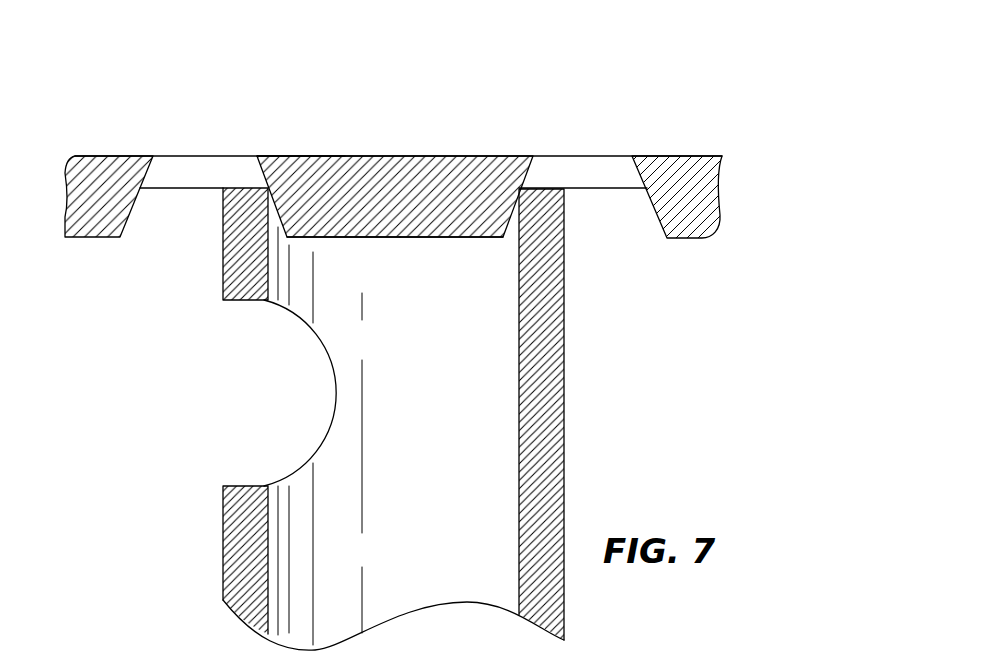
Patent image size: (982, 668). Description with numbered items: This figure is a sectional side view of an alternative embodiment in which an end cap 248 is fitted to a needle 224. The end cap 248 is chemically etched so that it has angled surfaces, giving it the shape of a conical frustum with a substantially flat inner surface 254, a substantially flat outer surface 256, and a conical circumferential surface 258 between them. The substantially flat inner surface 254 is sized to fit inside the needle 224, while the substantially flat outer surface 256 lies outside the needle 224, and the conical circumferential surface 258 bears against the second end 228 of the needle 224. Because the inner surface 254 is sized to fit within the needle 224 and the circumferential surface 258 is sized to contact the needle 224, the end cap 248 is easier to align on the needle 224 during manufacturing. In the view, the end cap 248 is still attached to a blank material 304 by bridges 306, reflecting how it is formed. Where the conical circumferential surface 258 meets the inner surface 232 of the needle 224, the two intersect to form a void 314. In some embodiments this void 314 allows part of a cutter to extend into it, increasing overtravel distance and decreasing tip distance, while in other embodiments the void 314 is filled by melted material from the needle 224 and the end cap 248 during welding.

The needle 224 is at (567, 393).
The second end 228 is at (643, 322).
The inner surface 232 is at (268, 510).
The end cap 248 is at (425, 175).
The substantially flat inner surface 254 is at (400, 237).
The substantially flat outer surface 256 is at (300, 156).
The conical circumferential surface 258 is at (505, 228).
The blank material 304 is at (688, 183).
The bridges 306 is at (610, 168).
The void 314 is at (272, 230).